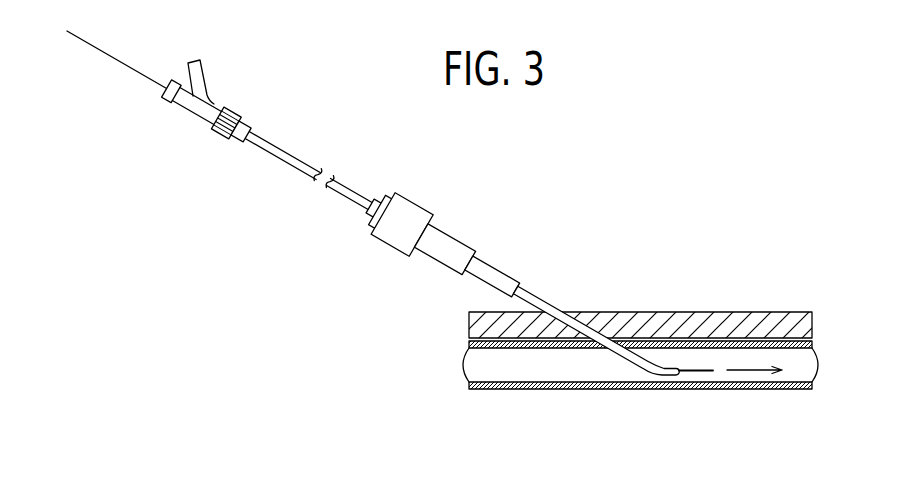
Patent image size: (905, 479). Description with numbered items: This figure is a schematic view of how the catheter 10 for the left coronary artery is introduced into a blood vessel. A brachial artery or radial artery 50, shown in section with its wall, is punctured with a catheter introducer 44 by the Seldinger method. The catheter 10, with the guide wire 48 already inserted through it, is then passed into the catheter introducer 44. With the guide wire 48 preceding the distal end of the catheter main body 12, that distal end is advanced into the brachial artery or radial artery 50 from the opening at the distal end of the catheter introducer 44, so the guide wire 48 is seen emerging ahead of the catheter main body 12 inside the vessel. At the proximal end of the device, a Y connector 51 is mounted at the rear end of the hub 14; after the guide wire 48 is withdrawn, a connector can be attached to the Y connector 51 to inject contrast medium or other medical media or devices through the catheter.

The catheter 10 is at (293, 118).
The catheter main body 12 is at (656, 377).
The hub 14 is at (242, 146).
The catheter introducer 44 is at (497, 238).
The guide wire 48 is at (699, 366).
The brachial artery or radial artery 50 is at (535, 390).
The Y connector 51 is at (196, 116).